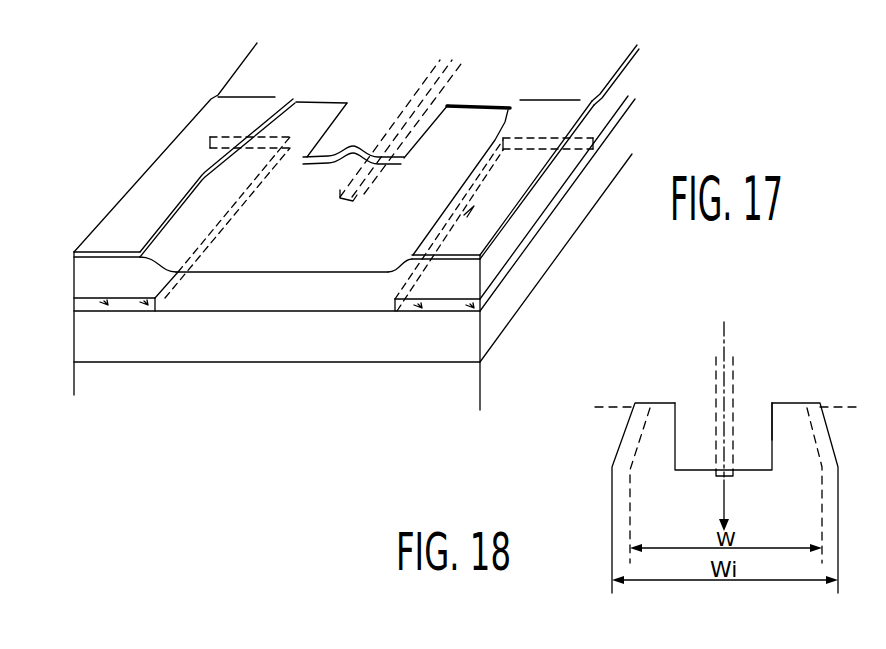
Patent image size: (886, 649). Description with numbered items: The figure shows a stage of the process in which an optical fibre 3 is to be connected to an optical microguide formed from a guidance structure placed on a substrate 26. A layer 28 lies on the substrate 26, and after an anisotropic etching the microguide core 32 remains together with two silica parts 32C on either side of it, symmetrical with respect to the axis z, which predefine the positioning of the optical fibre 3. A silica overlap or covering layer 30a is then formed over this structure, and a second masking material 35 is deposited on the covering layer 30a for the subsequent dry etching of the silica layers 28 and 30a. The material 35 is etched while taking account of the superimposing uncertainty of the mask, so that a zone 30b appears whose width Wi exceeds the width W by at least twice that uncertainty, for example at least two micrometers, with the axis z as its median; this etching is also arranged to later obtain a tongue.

In FIG. 17, the substrate 26 is at (299, 416).
In FIG. 17, the layer 28 is at (343, 347).
In FIG. 17, the silica overlap or covering layer 30a is at (77, 275).
In FIG. 17, the zone 30b is at (460, 137).
In FIG. 18, the zone 30b is at (790, 447).
In FIG. 17, the microguide core 32 is at (346, 203).
In FIG. 18, the microguide core 32 is at (717, 473).
In FIG. 17, the silica parts 32C is at (122, 307).
In FIG. 17, the second masking material 35 is at (250, 74).
In FIG. 18, the second masking material 35 is at (688, 447).
In FIG. 18, the optical fiber 3 is at (724, 348).